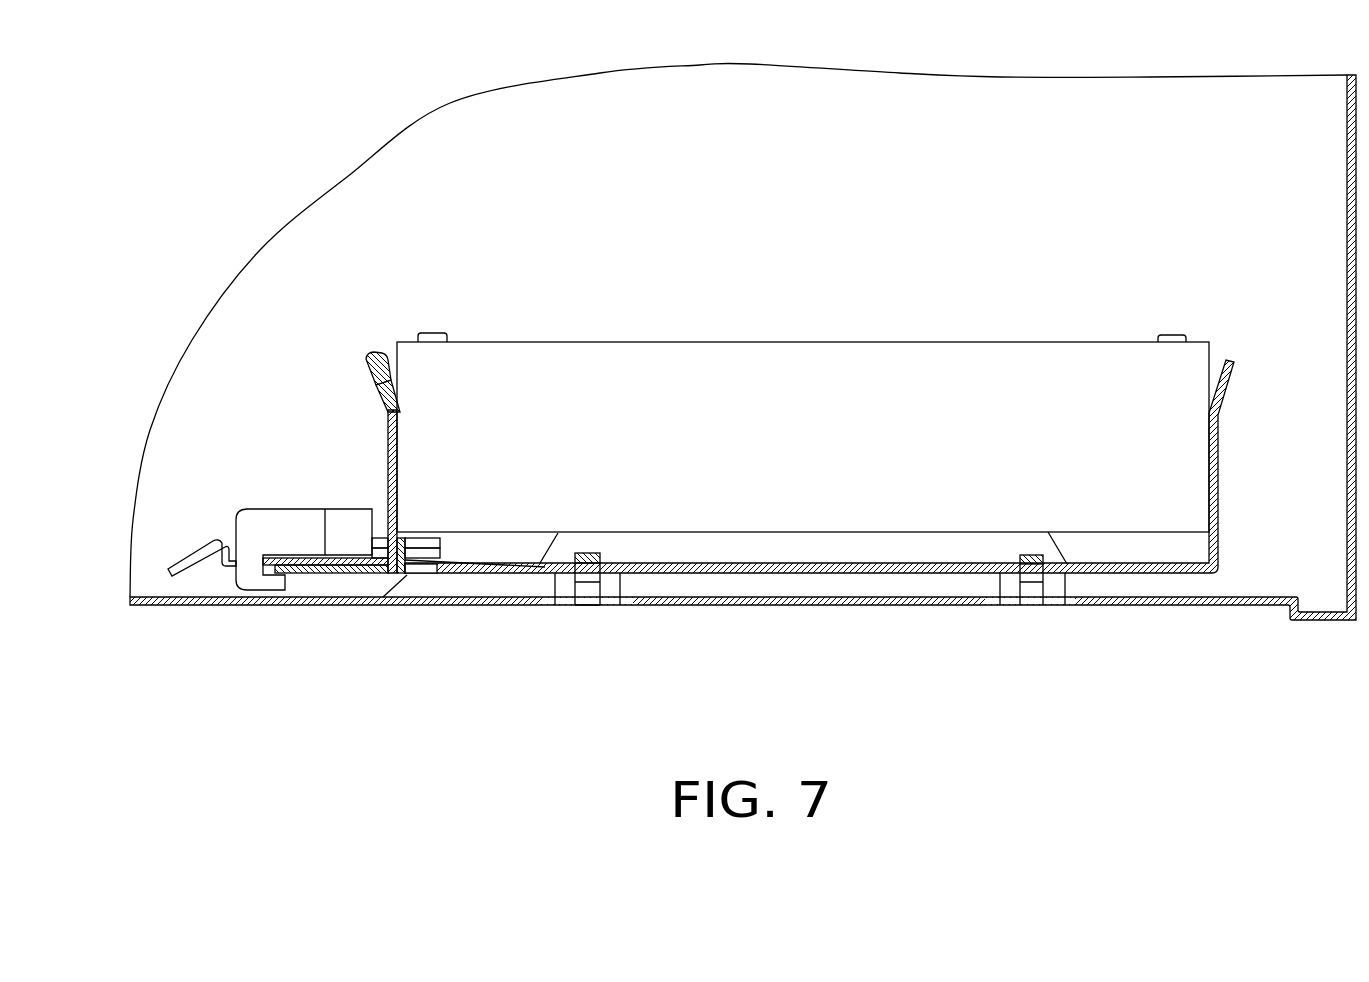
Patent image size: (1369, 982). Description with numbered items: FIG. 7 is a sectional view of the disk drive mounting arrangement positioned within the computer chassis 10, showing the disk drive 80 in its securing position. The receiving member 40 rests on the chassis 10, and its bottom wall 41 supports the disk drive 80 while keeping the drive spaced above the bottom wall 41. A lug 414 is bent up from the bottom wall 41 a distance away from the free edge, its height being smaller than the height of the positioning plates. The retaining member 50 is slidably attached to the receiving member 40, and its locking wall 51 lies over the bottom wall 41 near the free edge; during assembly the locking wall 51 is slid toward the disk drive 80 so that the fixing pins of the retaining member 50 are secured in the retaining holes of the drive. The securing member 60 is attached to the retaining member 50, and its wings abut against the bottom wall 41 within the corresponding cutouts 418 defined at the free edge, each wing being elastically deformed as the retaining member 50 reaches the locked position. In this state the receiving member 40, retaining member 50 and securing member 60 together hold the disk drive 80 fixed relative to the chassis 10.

The computer chassis 10 is at (487, 600).
The receiving member 40 is at (1148, 573).
The bottom wall 41 is at (302, 575).
The locking wall 51 is at (340, 575).
The lug 414 is at (399, 575).
The cutout 418 is at (263, 523).
The retaining member 50 is at (370, 357).
The securing member 60 is at (350, 522).
The disk drive 80 is at (565, 360).